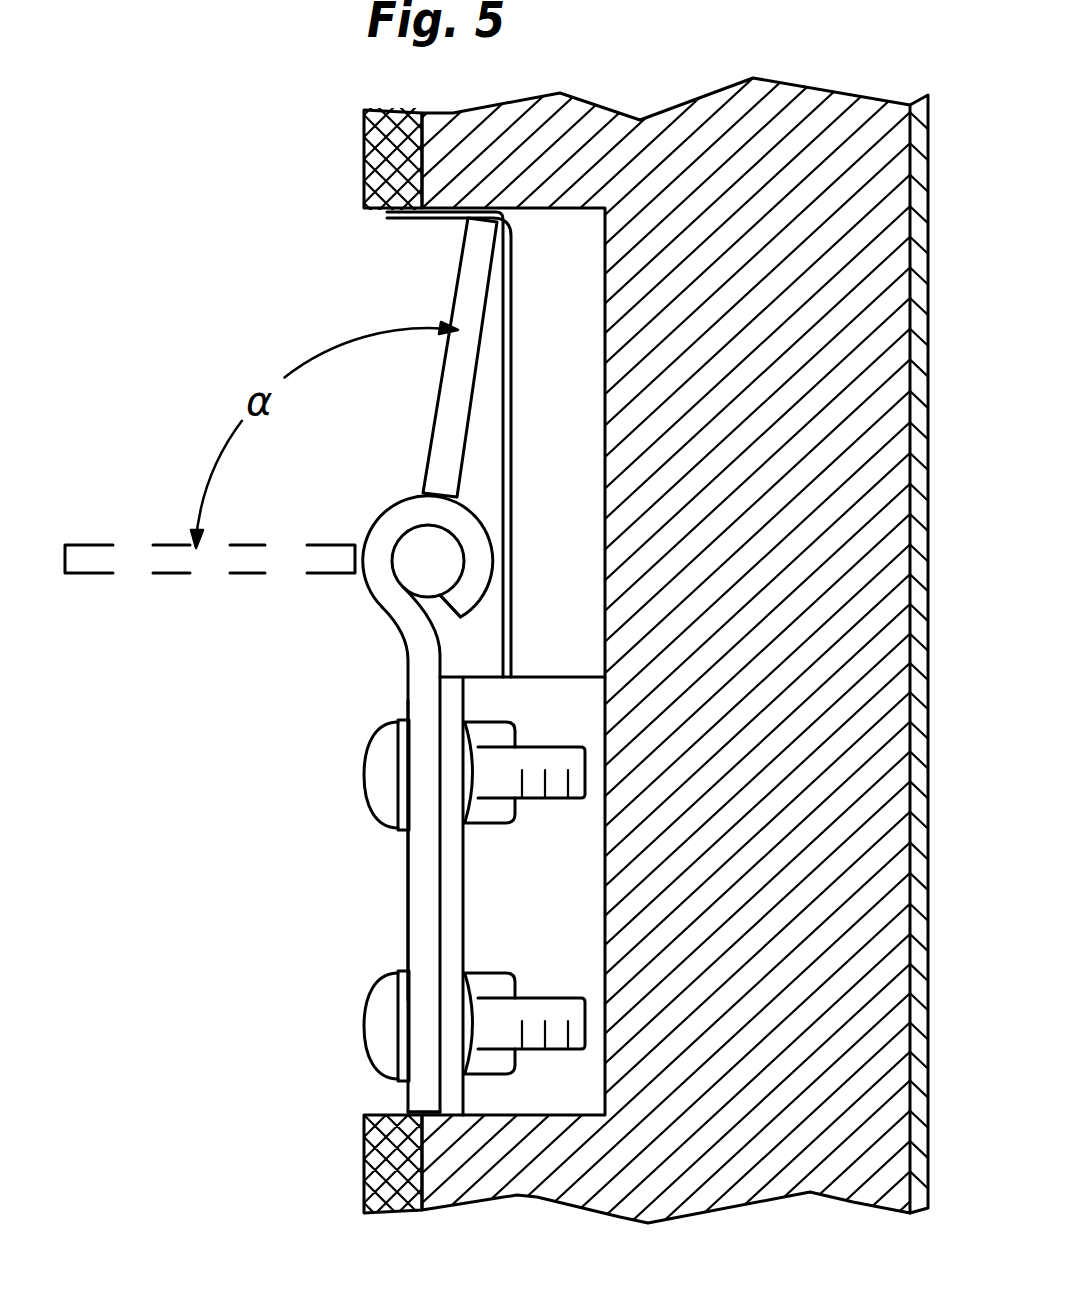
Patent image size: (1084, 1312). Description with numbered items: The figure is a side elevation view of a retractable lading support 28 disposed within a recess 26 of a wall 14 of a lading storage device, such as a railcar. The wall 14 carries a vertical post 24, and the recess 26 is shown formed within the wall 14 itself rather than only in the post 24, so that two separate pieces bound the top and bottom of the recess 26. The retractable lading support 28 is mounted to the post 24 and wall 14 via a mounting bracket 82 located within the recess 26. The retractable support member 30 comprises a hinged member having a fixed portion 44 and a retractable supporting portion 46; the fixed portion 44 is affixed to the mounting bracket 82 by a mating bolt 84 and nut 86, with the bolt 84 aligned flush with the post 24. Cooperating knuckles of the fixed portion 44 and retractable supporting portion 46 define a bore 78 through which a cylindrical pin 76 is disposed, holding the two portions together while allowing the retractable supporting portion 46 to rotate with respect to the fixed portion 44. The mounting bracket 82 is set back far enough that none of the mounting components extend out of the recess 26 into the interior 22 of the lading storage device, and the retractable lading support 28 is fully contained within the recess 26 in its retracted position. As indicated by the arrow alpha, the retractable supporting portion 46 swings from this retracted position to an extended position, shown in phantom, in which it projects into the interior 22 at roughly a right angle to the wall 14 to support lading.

The wall 14 is at (555, 1172).
The interior 22 is at (178, 628).
The vertical post 24 is at (363, 156).
The recess 26 is at (493, 955).
The retractable lading support 28 is at (262, 886).
The retractable support member 30 is at (366, 612).
The fixed portion 44 is at (396, 873).
The retractable supporting portion 46 is at (472, 265).
The pin 76 is at (423, 557).
The bore 78 is at (421, 613).
The mounting bracket 82 is at (453, 921).
The bolt 84 is at (565, 800).
The nut 86 is at (502, 822).